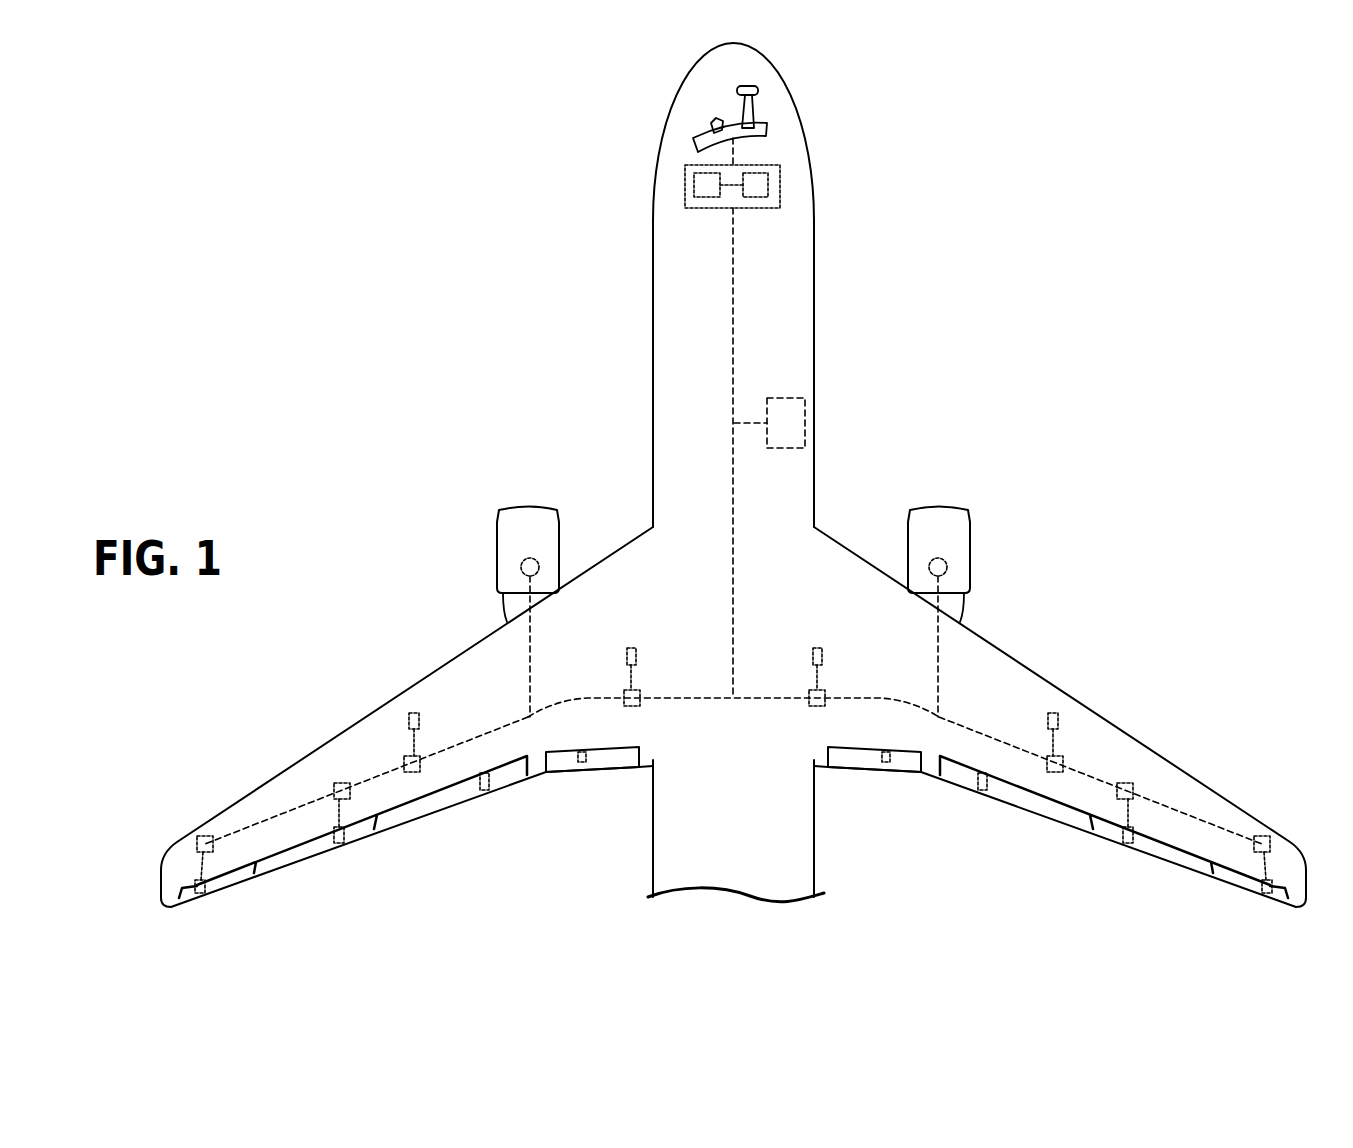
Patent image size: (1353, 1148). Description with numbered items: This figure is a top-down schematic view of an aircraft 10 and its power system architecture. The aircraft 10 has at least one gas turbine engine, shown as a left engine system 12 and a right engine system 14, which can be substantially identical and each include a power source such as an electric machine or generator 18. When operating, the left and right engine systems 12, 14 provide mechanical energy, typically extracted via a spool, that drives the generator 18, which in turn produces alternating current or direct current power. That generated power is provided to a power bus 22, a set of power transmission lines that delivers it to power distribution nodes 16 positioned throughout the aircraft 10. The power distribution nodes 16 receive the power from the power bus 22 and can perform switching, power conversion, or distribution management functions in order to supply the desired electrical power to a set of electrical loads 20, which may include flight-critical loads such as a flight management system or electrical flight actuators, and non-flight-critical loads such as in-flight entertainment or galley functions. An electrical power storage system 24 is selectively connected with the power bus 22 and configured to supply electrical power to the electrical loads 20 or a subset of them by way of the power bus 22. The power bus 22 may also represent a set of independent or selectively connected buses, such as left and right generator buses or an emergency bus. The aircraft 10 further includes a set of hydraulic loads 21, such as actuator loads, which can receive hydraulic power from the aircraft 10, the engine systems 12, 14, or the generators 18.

The aircraft 10 is at (524, 76).
The left engine system 12 is at (528, 517).
The right engine system 14 is at (952, 522).
The power distribution node 16 is at (632, 706).
The generator 18 is at (543, 560).
The electrical load 20 is at (700, 203).
The hydraulic load 21 is at (581, 762).
The power bus 22 is at (734, 395).
The electrical power storage system 24 is at (779, 437).